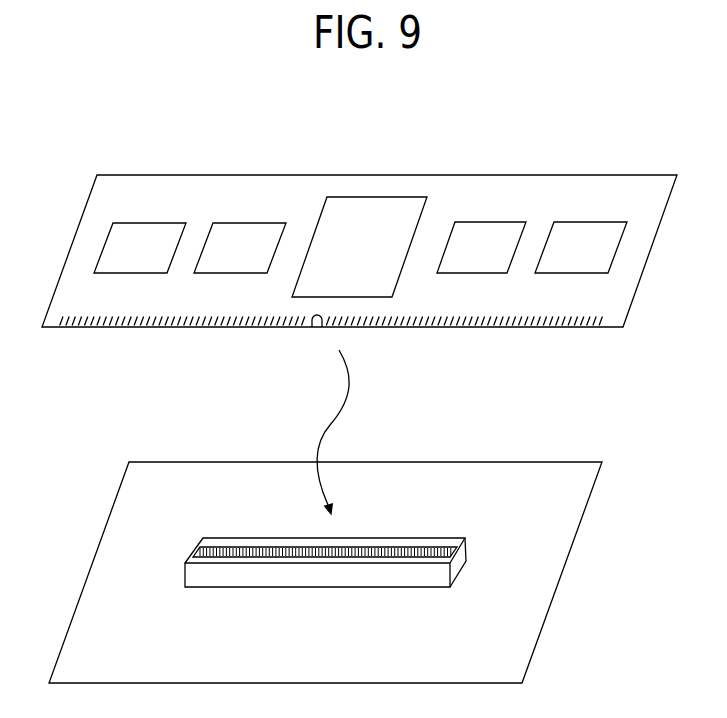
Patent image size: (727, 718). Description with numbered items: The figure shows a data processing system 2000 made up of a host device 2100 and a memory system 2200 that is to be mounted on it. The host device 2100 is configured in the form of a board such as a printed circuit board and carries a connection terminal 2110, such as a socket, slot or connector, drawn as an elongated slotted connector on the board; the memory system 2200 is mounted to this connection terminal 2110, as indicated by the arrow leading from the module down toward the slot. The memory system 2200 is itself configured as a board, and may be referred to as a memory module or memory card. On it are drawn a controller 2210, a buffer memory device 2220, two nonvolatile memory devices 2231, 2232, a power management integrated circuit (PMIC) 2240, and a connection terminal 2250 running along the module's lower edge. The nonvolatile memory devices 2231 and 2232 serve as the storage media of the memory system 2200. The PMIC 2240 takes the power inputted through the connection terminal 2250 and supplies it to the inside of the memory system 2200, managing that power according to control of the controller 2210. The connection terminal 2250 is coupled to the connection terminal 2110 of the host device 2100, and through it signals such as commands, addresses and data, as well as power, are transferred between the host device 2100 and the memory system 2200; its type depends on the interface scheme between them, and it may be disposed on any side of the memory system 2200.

The data processing system 2000 is at (50, 140).
The host device 2100 is at (325, 572).
The connection terminal 2110 is at (469, 546).
The memory system 2200 is at (359, 273).
The controller 2210 is at (359, 247).
The buffer memory device 2220 is at (240, 248).
The nonvolatile memory device 2231 is at (481, 247).
The nonvolatile memory device 2232 is at (581, 247).
The power management integrated circuit 2240 is at (140, 248).
The connection terminal 2250 is at (83, 327).